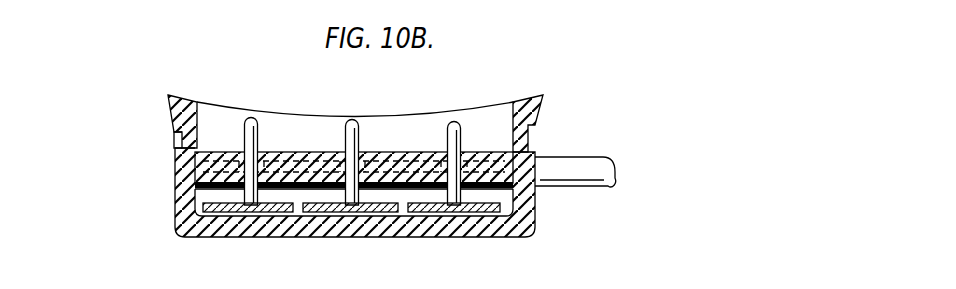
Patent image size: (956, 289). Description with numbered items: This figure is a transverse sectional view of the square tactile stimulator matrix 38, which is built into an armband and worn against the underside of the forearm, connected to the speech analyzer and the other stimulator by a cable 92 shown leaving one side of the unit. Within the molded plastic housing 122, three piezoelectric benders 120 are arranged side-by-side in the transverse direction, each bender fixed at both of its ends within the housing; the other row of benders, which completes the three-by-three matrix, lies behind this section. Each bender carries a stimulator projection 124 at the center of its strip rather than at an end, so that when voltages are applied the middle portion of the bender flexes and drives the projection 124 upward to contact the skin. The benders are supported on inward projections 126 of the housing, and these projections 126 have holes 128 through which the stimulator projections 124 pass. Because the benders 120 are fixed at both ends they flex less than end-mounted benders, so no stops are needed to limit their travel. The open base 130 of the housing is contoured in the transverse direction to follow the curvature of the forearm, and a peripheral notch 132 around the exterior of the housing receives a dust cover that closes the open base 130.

The tactile stimulator 38 is at (604, 88).
The cable 92 is at (574, 159).
The piezoelectric benders 120 is at (418, 213).
The housing 122 is at (492, 228).
The stimulator projections 124 is at (343, 124).
The inward projections 126 is at (222, 150).
The holes 128 is at (261, 151).
The base 130 is at (527, 97).
The peripheral notch 132 is at (173, 138).